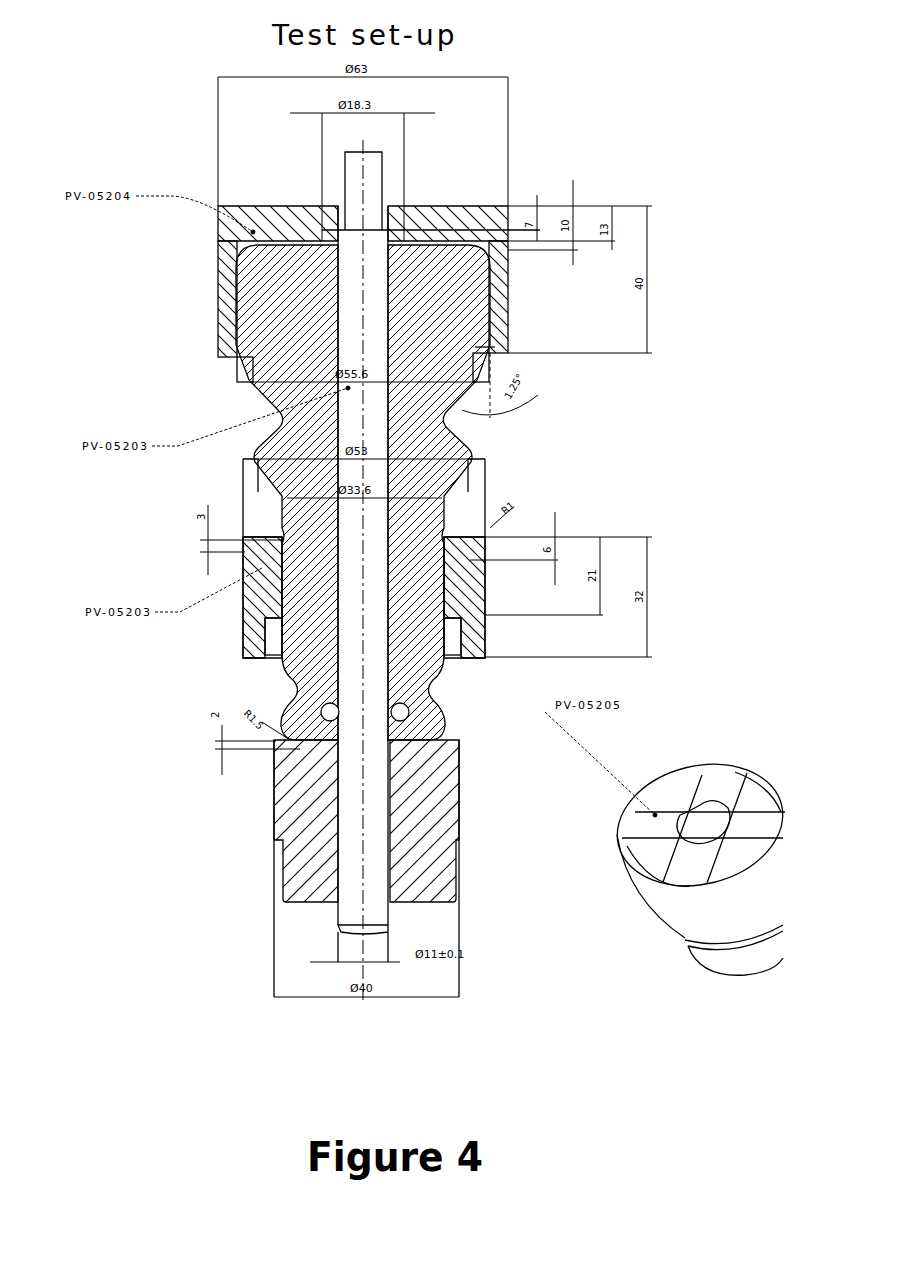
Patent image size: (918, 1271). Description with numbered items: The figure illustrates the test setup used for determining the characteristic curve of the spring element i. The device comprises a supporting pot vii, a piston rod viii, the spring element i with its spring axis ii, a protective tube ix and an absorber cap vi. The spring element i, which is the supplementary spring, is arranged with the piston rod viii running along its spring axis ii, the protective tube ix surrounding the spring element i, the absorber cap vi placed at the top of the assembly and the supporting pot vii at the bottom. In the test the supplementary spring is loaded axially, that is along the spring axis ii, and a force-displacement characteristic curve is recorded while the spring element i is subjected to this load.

The spring element i is at (443, 457).
The spring axis ii is at (363, 165).
The absorber cap vi is at (483, 222).
The supporting pot vii is at (422, 800).
The piston rod viii is at (380, 917).
The protective tube ix is at (470, 563).